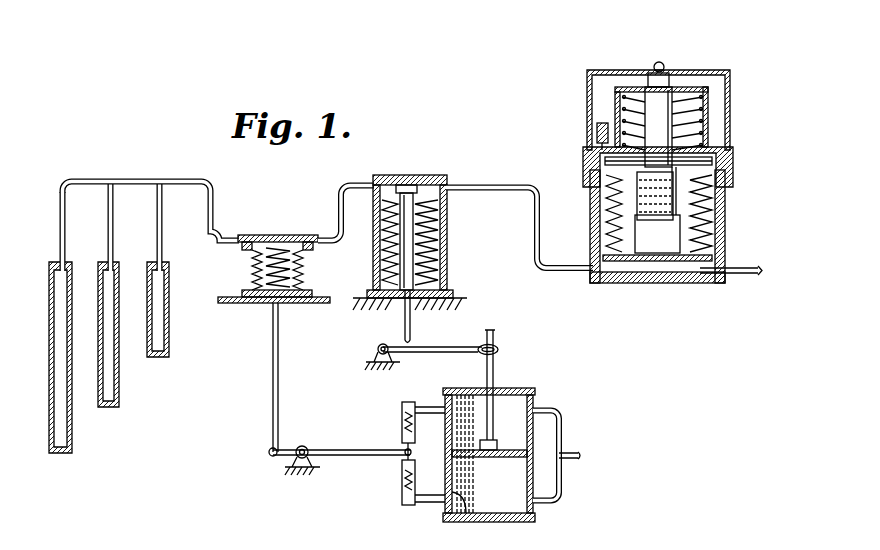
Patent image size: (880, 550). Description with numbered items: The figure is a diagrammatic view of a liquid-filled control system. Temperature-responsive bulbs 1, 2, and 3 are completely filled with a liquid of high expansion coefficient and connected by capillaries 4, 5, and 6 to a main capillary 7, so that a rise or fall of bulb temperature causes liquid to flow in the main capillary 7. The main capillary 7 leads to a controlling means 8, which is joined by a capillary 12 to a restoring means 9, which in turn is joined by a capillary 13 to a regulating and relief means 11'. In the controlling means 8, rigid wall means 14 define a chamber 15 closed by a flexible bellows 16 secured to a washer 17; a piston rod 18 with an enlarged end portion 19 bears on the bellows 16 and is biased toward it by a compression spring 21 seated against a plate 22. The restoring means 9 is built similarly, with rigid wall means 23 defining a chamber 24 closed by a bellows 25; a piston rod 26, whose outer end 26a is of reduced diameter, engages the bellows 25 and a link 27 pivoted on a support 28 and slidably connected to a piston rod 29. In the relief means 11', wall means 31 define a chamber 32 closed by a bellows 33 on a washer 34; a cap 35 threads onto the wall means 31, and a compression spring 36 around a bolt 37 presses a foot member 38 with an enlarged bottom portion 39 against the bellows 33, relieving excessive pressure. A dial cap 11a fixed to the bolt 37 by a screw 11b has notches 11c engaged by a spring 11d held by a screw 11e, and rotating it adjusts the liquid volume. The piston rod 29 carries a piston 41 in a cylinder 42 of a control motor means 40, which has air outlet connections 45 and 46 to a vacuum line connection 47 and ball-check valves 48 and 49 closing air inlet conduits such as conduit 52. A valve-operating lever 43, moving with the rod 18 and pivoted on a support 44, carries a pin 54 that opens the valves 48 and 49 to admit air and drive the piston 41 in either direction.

The condition-responsive member 1 is at (49, 354).
The condition-responsive member 2 is at (119, 380).
The condition-responsive member 3 is at (169, 328).
The capillary 4 is at (65, 222).
The capillary 5 is at (113, 220).
The capillary 6 is at (162, 232).
The main capillary 7 is at (97, 179).
The controlling means 8 is at (250, 235).
The restoring means 9 is at (405, 175).
The regulating and relief means 11' is at (750, 78).
The dial cap 11a is at (722, 70).
The screw 11b is at (662, 63).
The notches 11c is at (732, 148).
The spring 11d is at (735, 150).
The screw 11e is at (597, 130).
The capillary 12 is at (340, 202).
The capillary 13 is at (510, 185).
The rigid wall means 14 is at (313, 262).
The chamber 15 is at (252, 262).
The flexible wall 16 is at (252, 280).
The washer 17 is at (249, 300).
The piston rod 18 is at (273, 380).
The enlarged end portion 19 is at (275, 250).
The compression spring 21 is at (290, 300).
The plate 22 is at (226, 303).
The rigid wall means 23 is at (447, 217).
The chamber 24 is at (439, 246).
The flexible metal bellows 25 is at (441, 272).
The piston rod 26 is at (414, 327).
The outer end of operating rod 26a is at (405, 320).
The link 27 is at (441, 352).
The support 28 is at (380, 365).
The piston rod 29 is at (495, 367).
The rigid wall means 31 is at (590, 226).
The chamber 32 is at (718, 221).
The flexible metal bellows 33 is at (726, 197).
The washer 34 is at (733, 160).
The cap 35 is at (583, 157).
The compression spring 36 is at (702, 124).
The bolt 37 is at (645, 110).
The foot member 38 is at (654, 255).
The enlarged bottom portion 39 is at (677, 255).
The control motor means 40 is at (538, 390).
The piston 41 is at (490, 458).
The cylinder 42 is at (460, 516).
The valve-operating lever 43 is at (352, 436).
The support 44 is at (300, 468).
The air outlet connection 45 is at (565, 420).
The air outlet connection 46 is at (553, 505).
The vacuum line connection 47 is at (582, 455).
The ball-check valve 48 is at (402, 437).
The ball-check valve 49 is at (402, 483).
The air inlet conduit 52 is at (432, 402).
The pin 54 is at (415, 452).